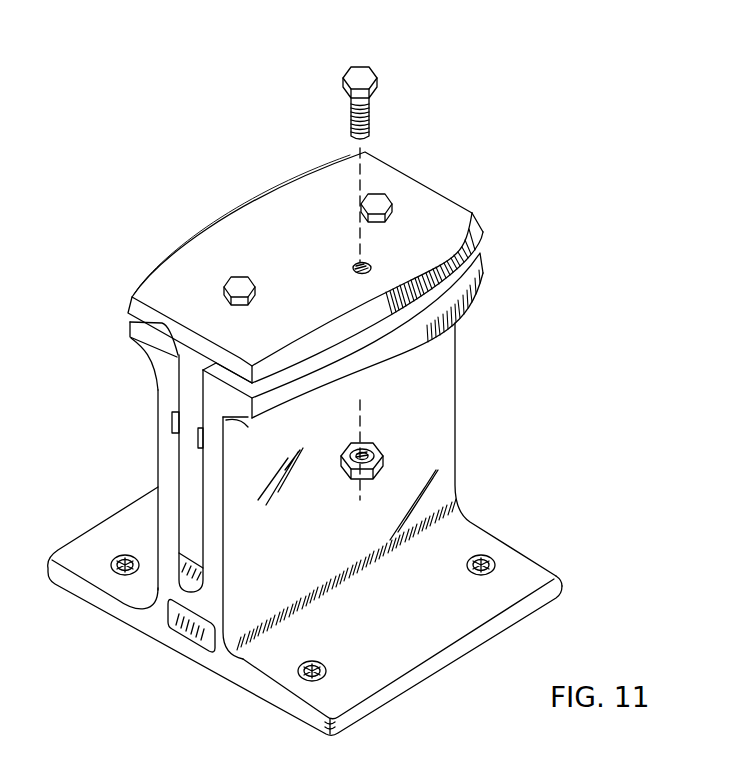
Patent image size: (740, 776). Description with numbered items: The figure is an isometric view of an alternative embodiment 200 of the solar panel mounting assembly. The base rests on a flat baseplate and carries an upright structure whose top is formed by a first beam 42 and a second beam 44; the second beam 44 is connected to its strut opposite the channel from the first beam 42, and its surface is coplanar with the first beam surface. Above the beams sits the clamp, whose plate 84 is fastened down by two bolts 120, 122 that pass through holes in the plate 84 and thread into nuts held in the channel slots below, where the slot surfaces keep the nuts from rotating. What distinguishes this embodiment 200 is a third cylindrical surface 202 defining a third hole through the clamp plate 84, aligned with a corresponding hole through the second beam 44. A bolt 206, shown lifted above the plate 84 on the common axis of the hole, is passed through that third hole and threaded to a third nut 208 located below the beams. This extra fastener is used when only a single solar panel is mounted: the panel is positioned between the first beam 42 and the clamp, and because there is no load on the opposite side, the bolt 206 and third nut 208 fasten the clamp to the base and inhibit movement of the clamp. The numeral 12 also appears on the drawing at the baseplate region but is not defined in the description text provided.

The alternative embodiment 200 is at (118, 200).
The bracket body / base 12 is at (153, 362).
The first beam 42 is at (138, 345).
The plate 84 is at (243, 212).
The second beam 44 is at (437, 348).
The bolt 120 is at (248, 274).
The bolt 122 is at (379, 194).
The third cylindrical surface 202 is at (368, 265).
The bolt 206 is at (361, 66).
The third nut 208 is at (347, 472).